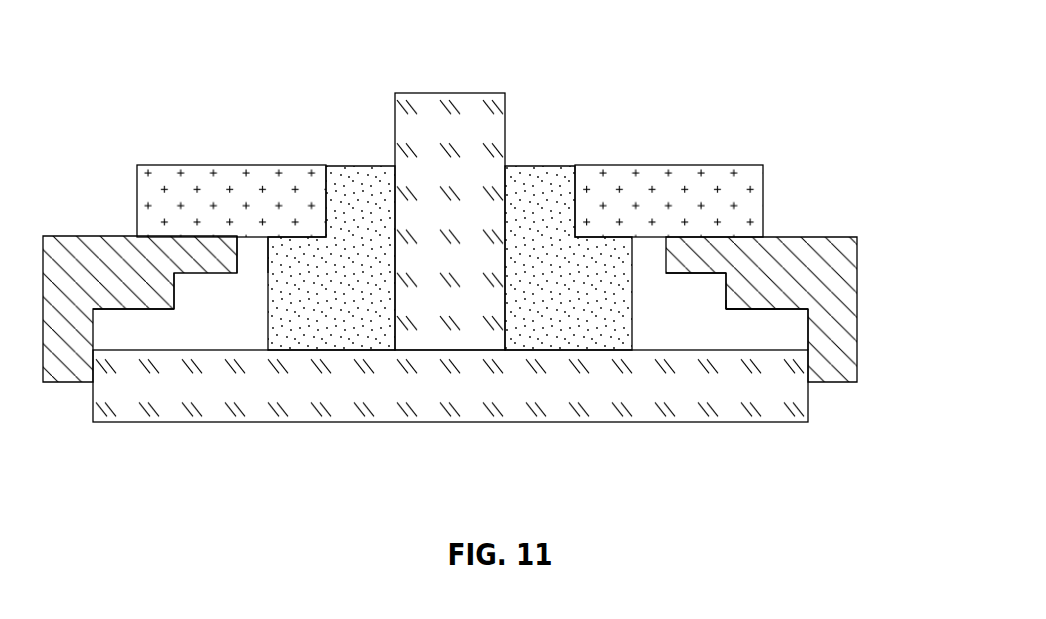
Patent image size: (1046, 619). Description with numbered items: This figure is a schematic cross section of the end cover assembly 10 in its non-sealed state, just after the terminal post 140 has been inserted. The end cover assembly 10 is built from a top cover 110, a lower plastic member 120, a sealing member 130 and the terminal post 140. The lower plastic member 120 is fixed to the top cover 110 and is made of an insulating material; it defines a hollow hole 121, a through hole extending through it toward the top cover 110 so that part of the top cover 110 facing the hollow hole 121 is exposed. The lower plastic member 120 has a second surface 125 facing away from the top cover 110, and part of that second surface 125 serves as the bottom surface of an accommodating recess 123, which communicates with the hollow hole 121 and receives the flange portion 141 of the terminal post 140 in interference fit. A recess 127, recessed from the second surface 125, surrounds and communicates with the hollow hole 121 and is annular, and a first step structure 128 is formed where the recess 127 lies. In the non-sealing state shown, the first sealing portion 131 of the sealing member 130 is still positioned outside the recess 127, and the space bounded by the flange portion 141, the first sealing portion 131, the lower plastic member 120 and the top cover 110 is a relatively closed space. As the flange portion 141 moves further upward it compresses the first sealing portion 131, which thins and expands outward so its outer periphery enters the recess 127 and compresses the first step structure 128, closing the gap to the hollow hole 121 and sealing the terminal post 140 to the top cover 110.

The end cover assembly 10 is at (456, 48).
The top cover 110 is at (675, 190).
The lower plastic member 120 is at (815, 258).
The hollow hole 121 is at (232, 257).
The accommodating recess 123 is at (772, 355).
The second surface 125 is at (767, 308).
The recess 127 is at (696, 312).
The first step structure 128 is at (195, 300).
The sealing member 130 is at (437, 203).
The first sealing portion 131 is at (312, 293).
The terminal post 140 is at (450, 424).
The flange portion 141 is at (340, 390).